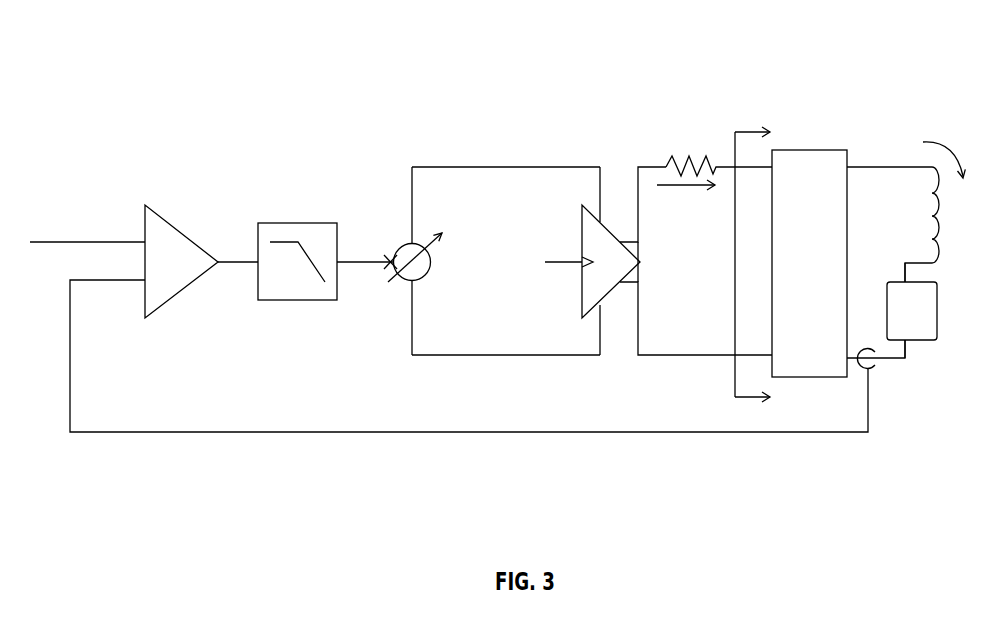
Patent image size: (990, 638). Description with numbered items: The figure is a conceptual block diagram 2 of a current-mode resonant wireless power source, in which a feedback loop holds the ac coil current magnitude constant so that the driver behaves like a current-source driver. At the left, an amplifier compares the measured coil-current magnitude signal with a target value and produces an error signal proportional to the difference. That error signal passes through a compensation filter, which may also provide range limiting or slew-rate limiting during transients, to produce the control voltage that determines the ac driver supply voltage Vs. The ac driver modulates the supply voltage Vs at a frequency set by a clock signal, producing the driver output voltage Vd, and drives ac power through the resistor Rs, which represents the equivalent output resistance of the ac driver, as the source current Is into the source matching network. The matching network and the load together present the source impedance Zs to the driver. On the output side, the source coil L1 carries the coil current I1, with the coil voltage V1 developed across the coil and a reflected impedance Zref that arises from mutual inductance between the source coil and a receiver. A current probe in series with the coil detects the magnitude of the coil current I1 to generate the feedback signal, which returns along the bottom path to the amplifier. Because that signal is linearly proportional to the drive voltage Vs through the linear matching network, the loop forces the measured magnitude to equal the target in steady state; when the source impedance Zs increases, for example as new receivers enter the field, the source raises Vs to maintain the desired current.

The conceptual block diagram 2 is at (135, 88).
The ac driver supply voltage Vs is at (431, 260).
The ac driver output voltage Vd is at (659, 260).
The resistor Rs is at (719, 154).
The source current Is is at (686, 199).
The source impedance Zs is at (752, 264).
The source coil L1 is at (914, 215).
The reflected impedance Zref is at (912, 311).
The coil voltage V1 is at (885, 279).
The coil current I1 is at (951, 155).